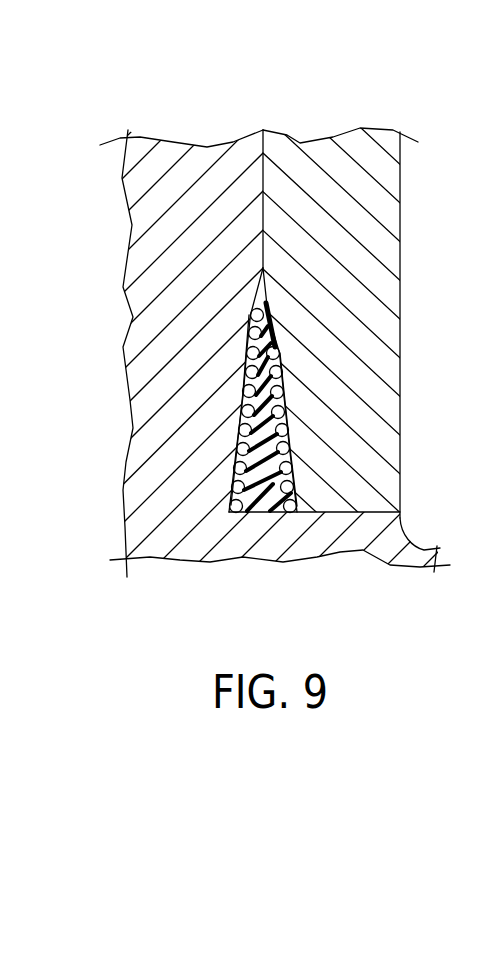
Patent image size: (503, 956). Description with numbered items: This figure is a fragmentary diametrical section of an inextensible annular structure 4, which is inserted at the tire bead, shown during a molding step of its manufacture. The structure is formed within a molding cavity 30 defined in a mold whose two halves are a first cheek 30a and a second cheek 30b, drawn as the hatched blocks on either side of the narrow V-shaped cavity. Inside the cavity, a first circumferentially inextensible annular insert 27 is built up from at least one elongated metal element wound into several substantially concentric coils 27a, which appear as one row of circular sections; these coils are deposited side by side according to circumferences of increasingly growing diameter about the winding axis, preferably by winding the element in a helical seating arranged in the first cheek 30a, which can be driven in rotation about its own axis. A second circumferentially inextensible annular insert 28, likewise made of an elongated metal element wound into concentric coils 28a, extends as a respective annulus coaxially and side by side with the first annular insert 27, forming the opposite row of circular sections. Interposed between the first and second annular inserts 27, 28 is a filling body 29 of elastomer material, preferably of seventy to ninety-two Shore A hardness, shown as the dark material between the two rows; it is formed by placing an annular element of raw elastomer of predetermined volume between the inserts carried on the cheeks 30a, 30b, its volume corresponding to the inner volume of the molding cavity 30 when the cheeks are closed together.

The inextensible annular structure 4 is at (336, 358).
The first annular insert 27 is at (299, 479).
The coils 27a is at (282, 391).
The second annular insert 28 is at (226, 490).
The coils 28a is at (243, 392).
The filling body 29 is at (260, 503).
The molding cavity 30 is at (354, 322).
The first cheek of the mold 30a is at (395, 186).
The second cheek of the mold 30b is at (175, 145).